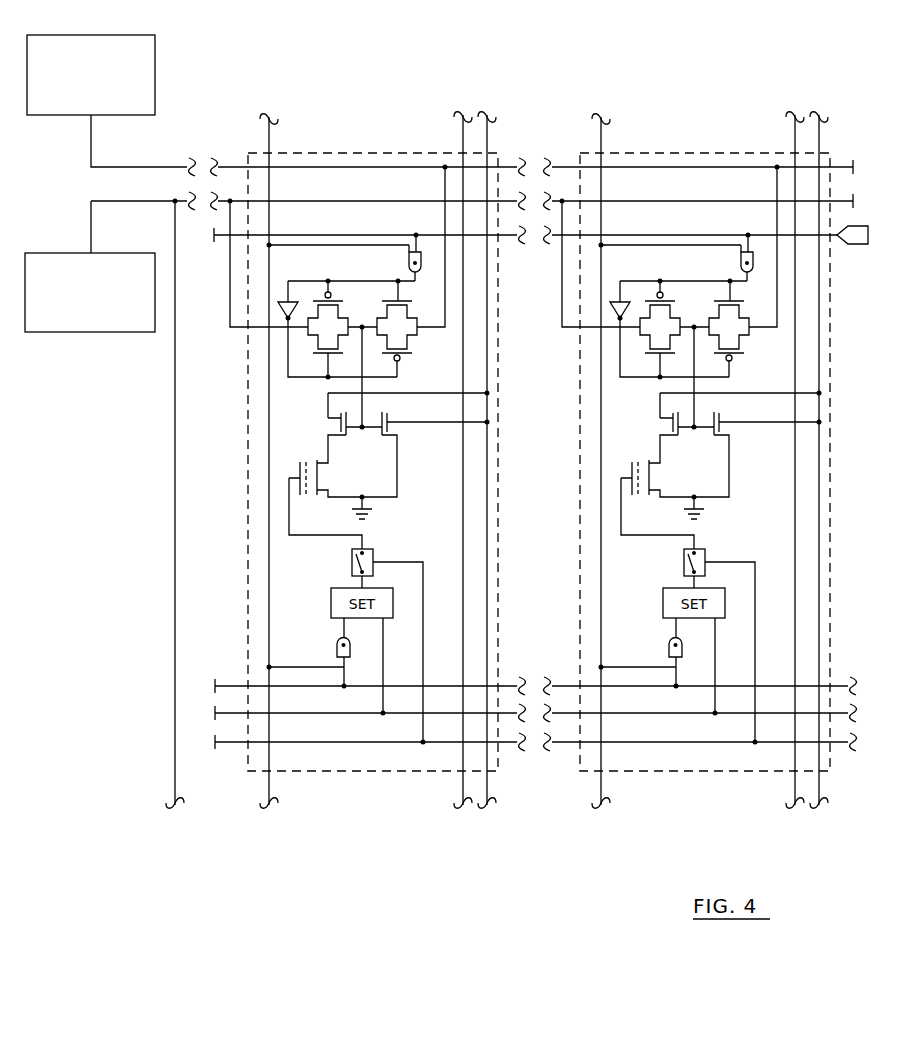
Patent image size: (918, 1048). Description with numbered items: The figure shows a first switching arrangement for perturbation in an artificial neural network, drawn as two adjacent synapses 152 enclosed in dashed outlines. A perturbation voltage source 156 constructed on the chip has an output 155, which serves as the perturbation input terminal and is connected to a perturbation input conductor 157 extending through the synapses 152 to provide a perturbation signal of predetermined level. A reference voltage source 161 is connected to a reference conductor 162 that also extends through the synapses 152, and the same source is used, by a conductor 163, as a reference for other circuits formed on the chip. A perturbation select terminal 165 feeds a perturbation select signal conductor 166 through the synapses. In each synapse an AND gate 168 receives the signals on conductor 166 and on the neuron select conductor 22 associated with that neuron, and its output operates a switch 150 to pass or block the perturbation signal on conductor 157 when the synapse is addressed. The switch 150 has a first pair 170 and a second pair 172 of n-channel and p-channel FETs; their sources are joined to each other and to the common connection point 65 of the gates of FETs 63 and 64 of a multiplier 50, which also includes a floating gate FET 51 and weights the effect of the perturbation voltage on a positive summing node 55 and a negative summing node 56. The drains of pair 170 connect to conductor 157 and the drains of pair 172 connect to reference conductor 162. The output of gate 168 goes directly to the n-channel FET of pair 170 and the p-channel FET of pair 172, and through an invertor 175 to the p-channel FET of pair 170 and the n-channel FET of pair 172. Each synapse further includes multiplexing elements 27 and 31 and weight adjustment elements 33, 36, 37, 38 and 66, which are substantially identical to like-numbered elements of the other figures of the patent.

The neuron select conductor 22 is at (269, 140).
The multiplexing element 27 is at (330, 687).
The multiplexing element 31 is at (337, 645).
The weight adjustment element 33 is at (331, 600).
The weight adjustment element 36 is at (350, 714).
The weight adjustment element 37 is at (376, 550).
The weight adjustment element 38 is at (367, 743).
The multiplier 50 is at (401, 466).
The floating gate FET 51 is at (308, 462).
The positive summing node 55 is at (487, 531).
The negative summing node 56 is at (463, 591).
The FET 63 is at (350, 430).
The FET 64 is at (391, 430).
The common connection point 65 is at (363, 424).
The weight adjustment element 66 is at (293, 508).
The switch 150 is at (636, 336).
The synapse 152 is at (579, 411).
The output of perturbation voltage source 155 is at (91, 136).
The perturbation voltage source 156 is at (155, 62).
The perturbation input conductor 157 is at (330, 167).
The reference voltage source 161 is at (78, 253).
The reference conductor 162 is at (350, 201).
The conductor 163 is at (175, 450).
The perturbation select terminal 165 is at (860, 244).
The perturbation select signal conductor 166 is at (627, 233).
The AND gate 168 is at (407, 258).
The first pair of FETs 170 is at (408, 337).
The second pair of FETs 172 is at (318, 335).
The invertor 175 is at (278, 303).